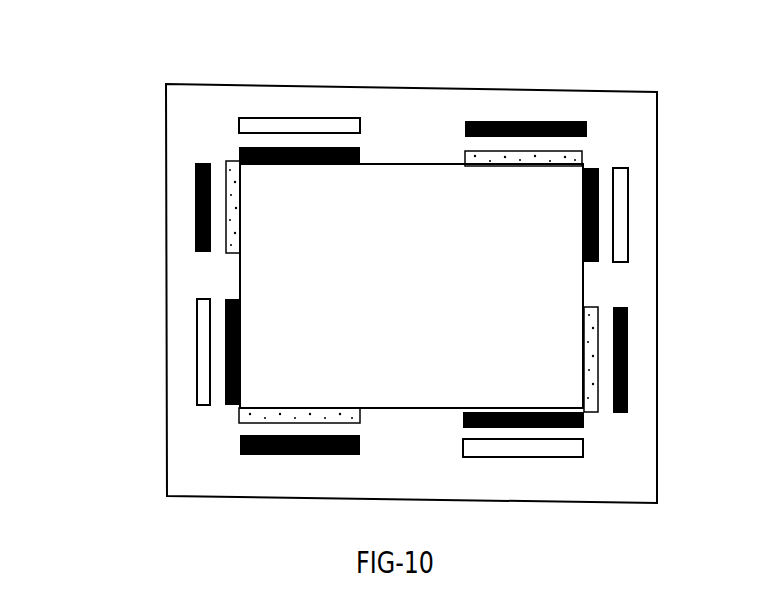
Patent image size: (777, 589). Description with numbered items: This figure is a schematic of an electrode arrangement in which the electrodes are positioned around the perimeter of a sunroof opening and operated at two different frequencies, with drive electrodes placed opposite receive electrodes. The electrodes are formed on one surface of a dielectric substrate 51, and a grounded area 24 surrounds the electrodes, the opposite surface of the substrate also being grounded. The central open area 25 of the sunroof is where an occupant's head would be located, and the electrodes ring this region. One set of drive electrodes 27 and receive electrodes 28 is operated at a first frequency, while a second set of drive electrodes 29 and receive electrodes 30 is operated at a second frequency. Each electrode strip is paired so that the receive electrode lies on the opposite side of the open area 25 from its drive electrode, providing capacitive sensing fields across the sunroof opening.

The grounded area 24 is at (185, 279).
The open area 25 is at (302, 290).
The drive electrodes 27 is at (302, 125).
The receive electrodes 28 is at (226, 170).
The drive electrodes 29 is at (195, 183).
The receive electrodes 30 is at (350, 147).
The dielectric substrate 51 is at (185, 446).